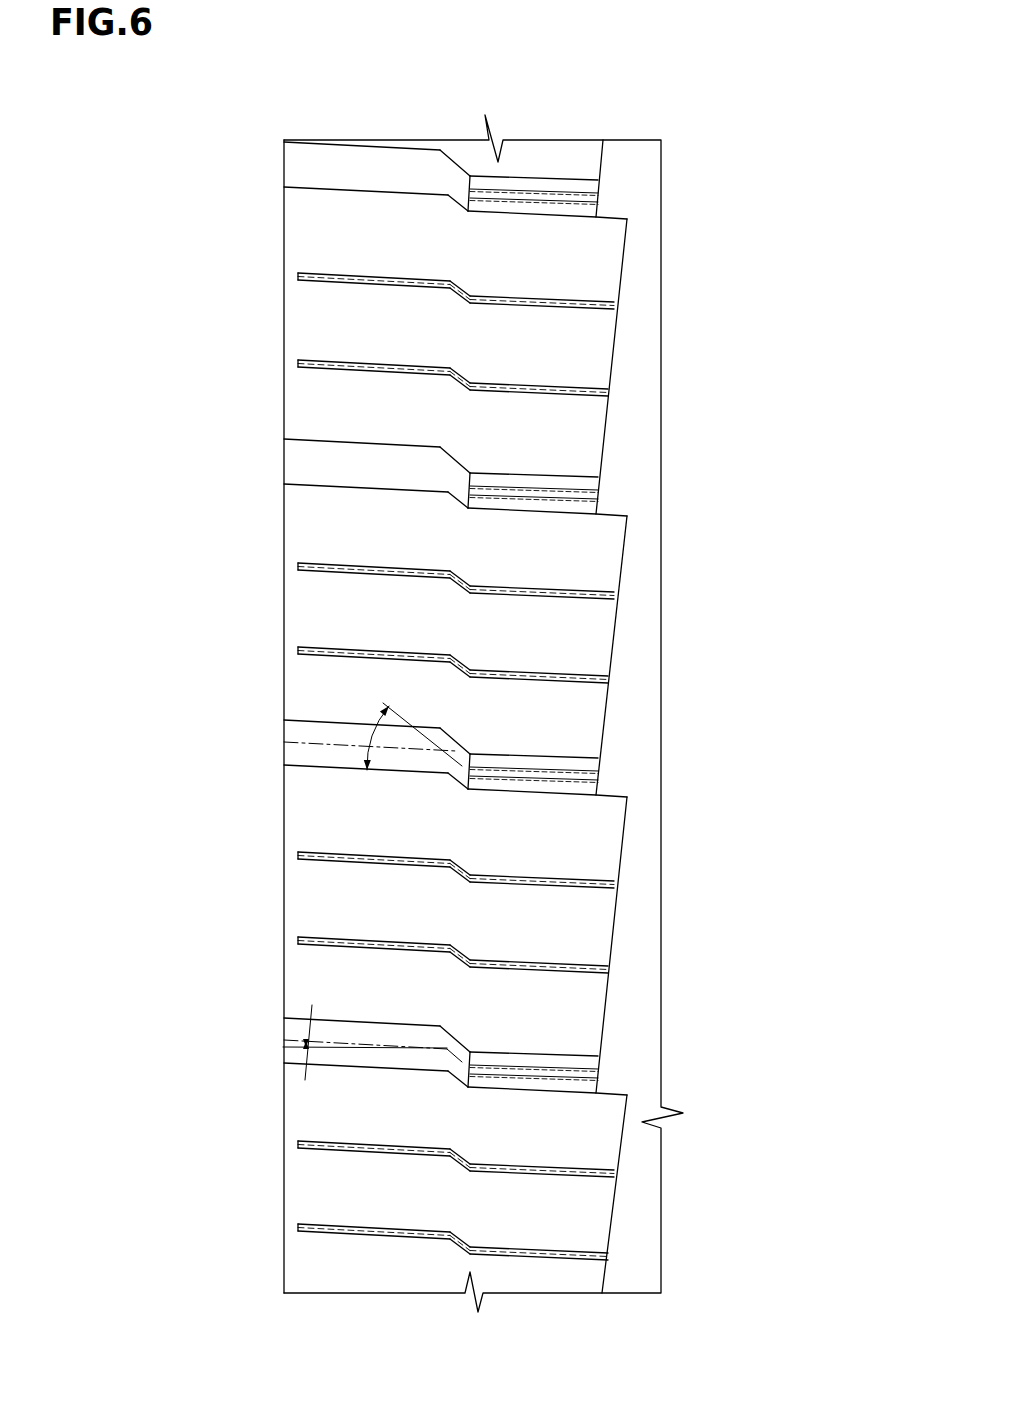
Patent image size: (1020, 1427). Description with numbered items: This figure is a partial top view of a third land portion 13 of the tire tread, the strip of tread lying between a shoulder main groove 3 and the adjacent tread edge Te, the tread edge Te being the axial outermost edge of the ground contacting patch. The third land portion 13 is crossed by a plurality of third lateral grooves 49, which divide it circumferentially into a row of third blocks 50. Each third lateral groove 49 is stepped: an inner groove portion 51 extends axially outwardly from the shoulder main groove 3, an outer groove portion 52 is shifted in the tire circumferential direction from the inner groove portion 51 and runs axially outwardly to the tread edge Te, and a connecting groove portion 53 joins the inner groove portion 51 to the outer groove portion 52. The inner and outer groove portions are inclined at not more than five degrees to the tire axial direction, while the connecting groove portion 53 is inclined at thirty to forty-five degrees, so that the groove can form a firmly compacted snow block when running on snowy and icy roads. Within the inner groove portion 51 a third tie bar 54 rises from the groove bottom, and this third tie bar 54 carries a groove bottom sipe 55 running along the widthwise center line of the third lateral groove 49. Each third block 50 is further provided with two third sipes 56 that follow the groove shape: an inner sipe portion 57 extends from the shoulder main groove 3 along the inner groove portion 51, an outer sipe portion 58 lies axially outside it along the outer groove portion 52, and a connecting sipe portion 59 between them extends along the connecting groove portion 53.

The shoulder main groove 3 is at (632, 180).
The tread edge Te is at (284, 205).
The third land portion 13 is at (405, 240).
The third block 50 is at (405, 328).
The third lateral groove 49 is at (503, 618).
The outer groove portion 52 is at (360, 468).
The connecting groove portion 53 is at (458, 482).
The inner groove portion 51 is at (545, 488).
The groove bottom sipe 55 is at (533, 492).
The third tie bar 54 is at (507, 502).
The third sipe 56 is at (560, 753).
The outer sipe portion 58 is at (377, 857).
The connecting sipe portion 59 is at (467, 868).
The inner sipe portion 57 is at (545, 880).